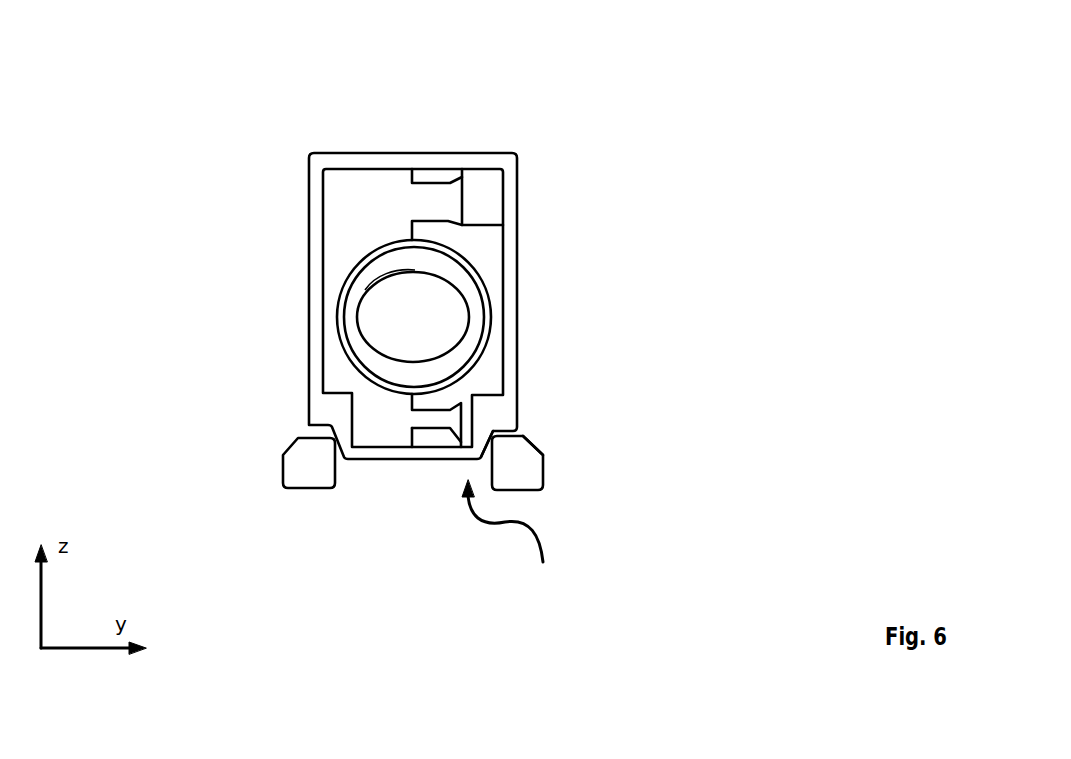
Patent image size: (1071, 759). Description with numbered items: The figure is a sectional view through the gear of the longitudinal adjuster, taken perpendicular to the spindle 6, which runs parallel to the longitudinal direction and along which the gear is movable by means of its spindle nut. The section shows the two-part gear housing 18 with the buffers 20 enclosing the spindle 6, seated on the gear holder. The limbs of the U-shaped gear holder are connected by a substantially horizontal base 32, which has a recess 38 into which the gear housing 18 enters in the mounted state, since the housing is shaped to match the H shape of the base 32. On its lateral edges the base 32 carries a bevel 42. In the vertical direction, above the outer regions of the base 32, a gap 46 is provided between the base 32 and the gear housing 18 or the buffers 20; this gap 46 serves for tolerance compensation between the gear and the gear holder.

The spindle 6 is at (393, 315).
The gear housing 18 is at (397, 217).
The buffers 20 is at (513, 322).
The base 32 is at (528, 470).
The recess 38 is at (514, 539).
The bevel 42 is at (538, 446).
The gap 46 is at (513, 435).